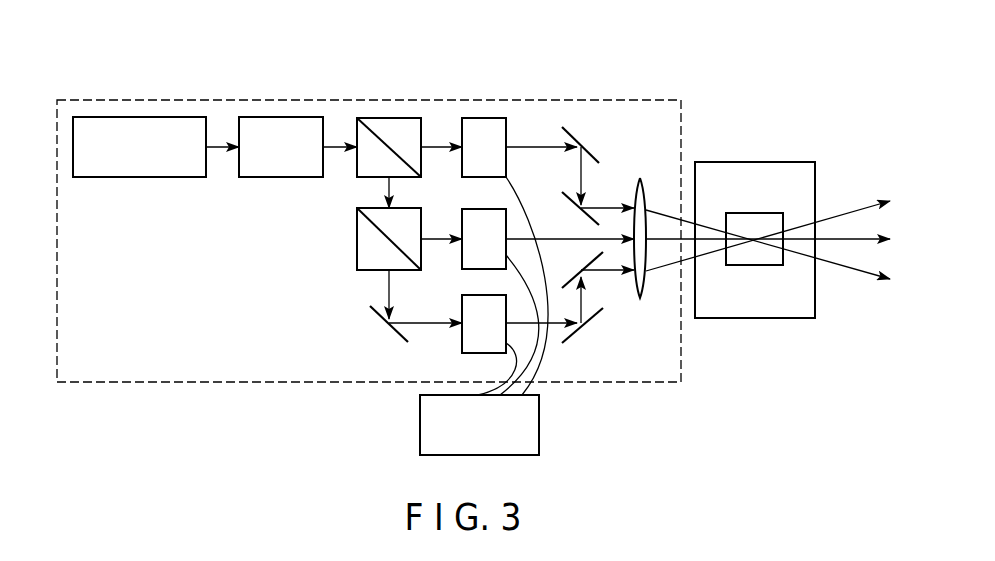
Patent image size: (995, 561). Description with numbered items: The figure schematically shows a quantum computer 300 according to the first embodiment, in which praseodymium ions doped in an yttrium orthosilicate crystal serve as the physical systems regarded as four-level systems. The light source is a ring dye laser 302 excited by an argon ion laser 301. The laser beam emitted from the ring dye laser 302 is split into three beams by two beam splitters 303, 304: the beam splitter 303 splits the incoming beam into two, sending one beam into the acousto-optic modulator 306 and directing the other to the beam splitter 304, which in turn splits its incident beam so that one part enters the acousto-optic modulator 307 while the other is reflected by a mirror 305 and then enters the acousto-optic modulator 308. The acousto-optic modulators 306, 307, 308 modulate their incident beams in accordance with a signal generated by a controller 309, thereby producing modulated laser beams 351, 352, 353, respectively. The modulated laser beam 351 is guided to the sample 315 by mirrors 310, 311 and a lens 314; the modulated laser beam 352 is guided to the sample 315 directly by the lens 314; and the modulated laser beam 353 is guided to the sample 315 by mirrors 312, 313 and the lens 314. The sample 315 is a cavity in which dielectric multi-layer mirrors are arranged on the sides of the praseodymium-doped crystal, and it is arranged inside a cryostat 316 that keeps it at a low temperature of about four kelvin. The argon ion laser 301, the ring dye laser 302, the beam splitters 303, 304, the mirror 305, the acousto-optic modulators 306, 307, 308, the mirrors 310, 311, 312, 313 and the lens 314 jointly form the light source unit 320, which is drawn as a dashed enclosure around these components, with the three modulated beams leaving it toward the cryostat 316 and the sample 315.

The quantum computer 300 is at (210, 56).
The argon ion laser 301 is at (141, 117).
The ring dye laser 302 is at (281, 117).
The beam splitter 303 is at (388, 118).
The beam splitter 304 is at (357, 241).
The mirror 305 is at (375, 315).
The acousto-optic modulator 306 is at (485, 118).
The acousto-optic modulator 307 is at (463, 274).
The acousto-optic modulator 308 is at (463, 354).
The controller 309 is at (420, 427).
The mirror 310 is at (572, 128).
The mirror 311 is at (587, 222).
The mirror 312 is at (597, 312).
The mirror 313 is at (577, 276).
The lens 314 is at (639, 178).
The sample 315 is at (755, 218).
The cryostat 316 is at (755, 162).
The light source unit 320 is at (645, 100).
The modulated laser beam 351 is at (672, 215).
The modulated laser beam 352 is at (688, 243).
The modulated laser beam 353 is at (662, 268).